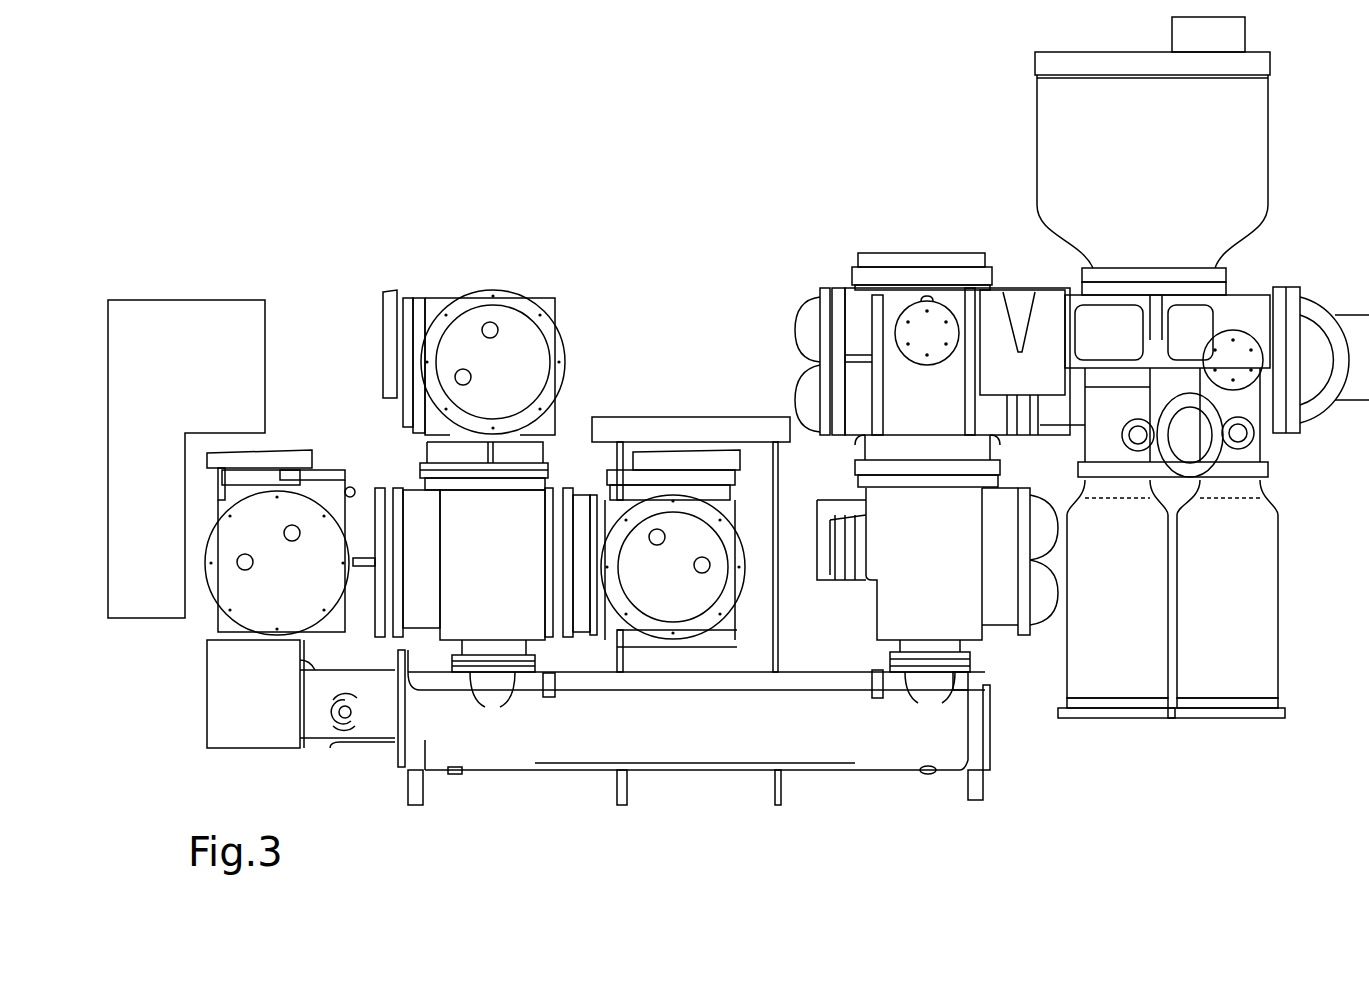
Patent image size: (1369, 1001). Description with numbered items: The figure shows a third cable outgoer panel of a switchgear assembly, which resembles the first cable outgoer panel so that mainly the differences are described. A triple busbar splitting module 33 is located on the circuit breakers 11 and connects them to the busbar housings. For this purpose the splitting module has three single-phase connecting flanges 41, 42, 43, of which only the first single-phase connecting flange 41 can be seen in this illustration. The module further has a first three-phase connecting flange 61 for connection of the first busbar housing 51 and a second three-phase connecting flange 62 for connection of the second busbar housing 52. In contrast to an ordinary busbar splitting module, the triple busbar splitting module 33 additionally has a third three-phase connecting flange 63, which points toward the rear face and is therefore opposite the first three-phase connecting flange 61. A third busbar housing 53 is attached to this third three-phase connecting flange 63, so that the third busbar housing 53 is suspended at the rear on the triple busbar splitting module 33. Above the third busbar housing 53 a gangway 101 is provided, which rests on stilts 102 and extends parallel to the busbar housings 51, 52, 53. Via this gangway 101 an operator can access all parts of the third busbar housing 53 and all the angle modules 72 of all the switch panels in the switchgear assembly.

The circuit breaker 11 is at (940, 733).
The triple busbar splitting module 33 is at (418, 538).
The first single-phase connecting flange 41 is at (500, 660).
The second single-phase connecting flange 42 is at (930, 671).
The third single-phase connecting flange 43 is at (755, 684).
The first busbar housing 51 is at (225, 580).
The second busbar housing 52 is at (515, 345).
The third busbar housing 53 is at (702, 540).
The first three-phase connecting flange 61 is at (387, 630).
The second three-phase connecting flange 62 is at (423, 466).
The third three-phase connecting flange 63 is at (556, 492).
The angle module 72 is at (887, 325).
The gangway 101 is at (642, 420).
The stilts 102 is at (778, 600).